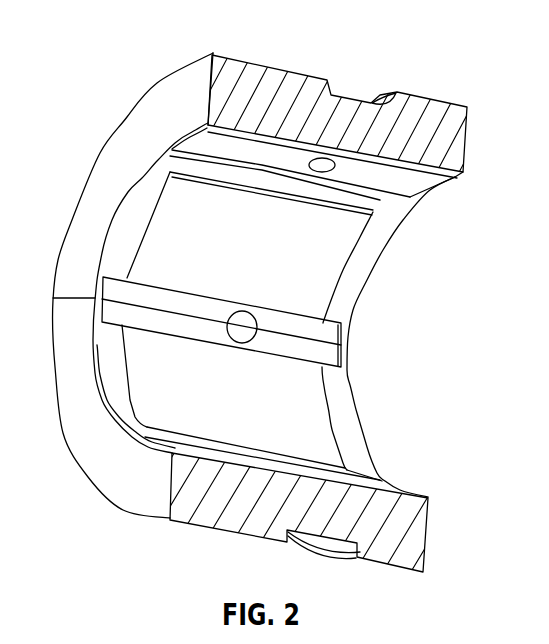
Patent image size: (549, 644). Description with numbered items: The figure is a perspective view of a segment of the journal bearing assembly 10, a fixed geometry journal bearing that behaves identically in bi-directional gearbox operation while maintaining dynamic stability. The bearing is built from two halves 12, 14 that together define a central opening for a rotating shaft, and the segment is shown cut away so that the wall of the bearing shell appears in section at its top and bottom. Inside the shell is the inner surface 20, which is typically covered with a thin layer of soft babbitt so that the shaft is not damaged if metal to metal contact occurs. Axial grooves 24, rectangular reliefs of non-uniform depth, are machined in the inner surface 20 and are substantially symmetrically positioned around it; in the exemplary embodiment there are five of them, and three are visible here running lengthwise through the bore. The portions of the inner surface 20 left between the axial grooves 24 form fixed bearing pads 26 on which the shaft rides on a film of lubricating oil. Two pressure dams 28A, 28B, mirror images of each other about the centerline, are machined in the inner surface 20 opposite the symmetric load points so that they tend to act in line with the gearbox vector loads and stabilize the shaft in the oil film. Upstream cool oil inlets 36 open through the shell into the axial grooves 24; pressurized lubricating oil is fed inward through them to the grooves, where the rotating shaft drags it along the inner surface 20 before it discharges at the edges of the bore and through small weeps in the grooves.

The journal bearing assembly 10 is at (113, 39).
The half 12 is at (110, 157).
The half 14 is at (107, 480).
The inner surface 20 is at (340, 312).
The axial grooves 24 is at (263, 155).
The fixed bearing pads 26 is at (377, 230).
The pressure dam 28A is at (320, 247).
The pressure dam 28B is at (292, 427).
The upstream cool oil inlets 36 is at (323, 166).